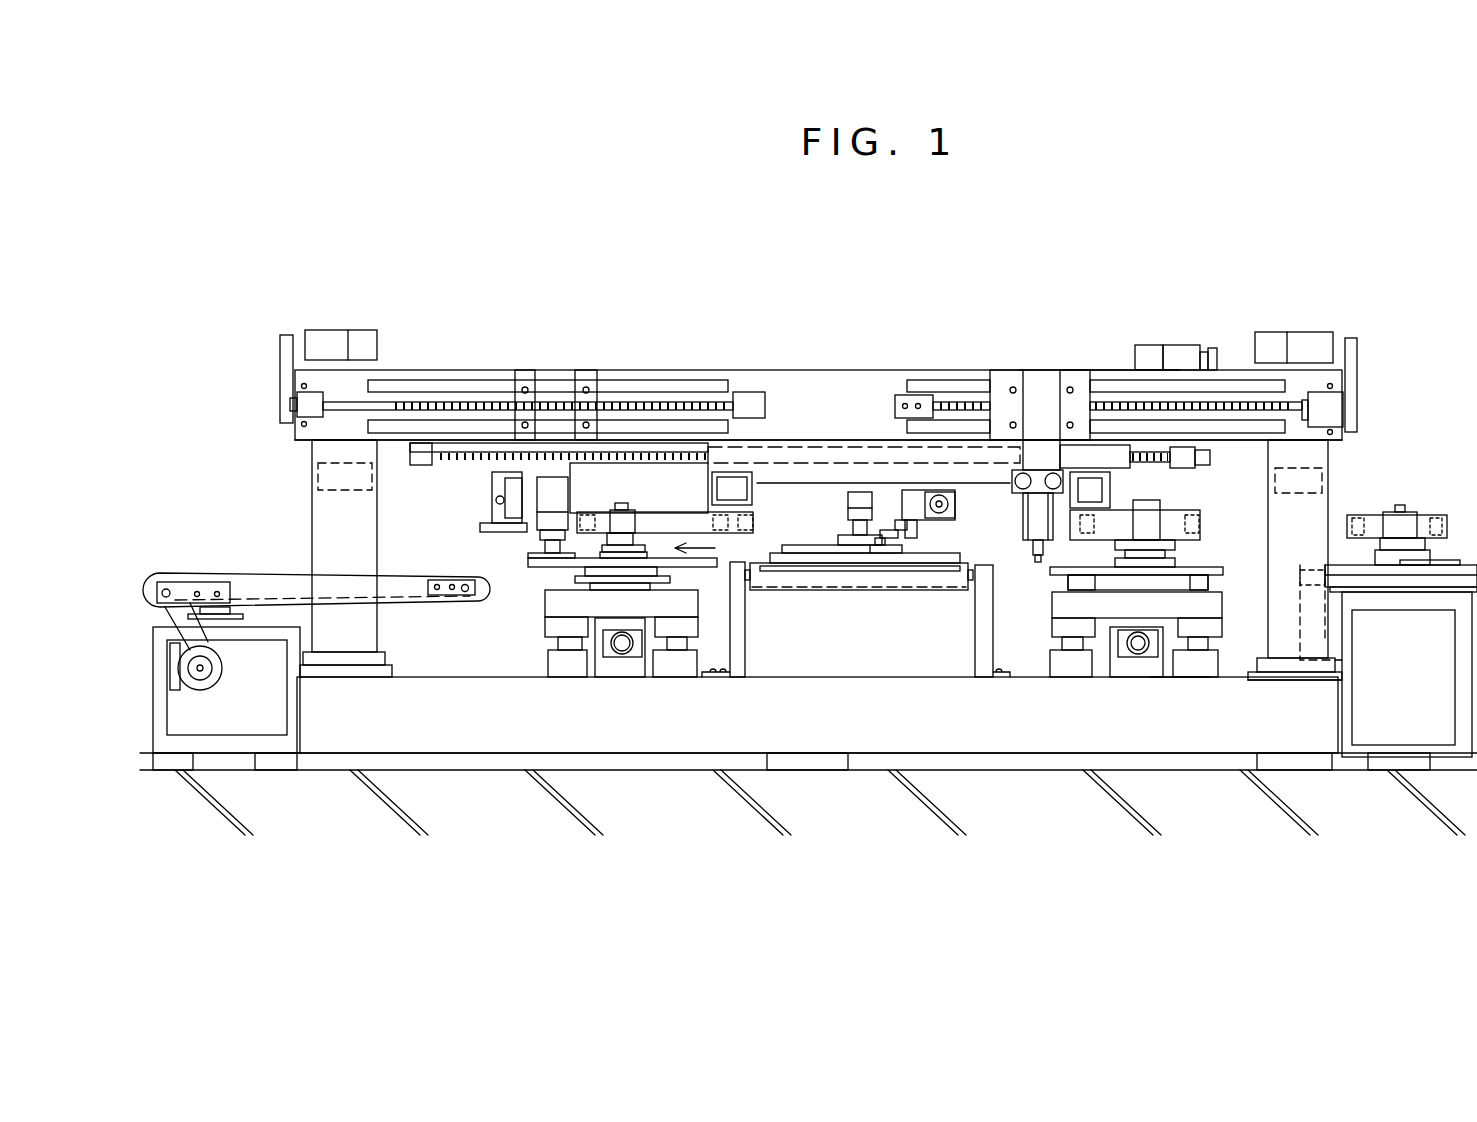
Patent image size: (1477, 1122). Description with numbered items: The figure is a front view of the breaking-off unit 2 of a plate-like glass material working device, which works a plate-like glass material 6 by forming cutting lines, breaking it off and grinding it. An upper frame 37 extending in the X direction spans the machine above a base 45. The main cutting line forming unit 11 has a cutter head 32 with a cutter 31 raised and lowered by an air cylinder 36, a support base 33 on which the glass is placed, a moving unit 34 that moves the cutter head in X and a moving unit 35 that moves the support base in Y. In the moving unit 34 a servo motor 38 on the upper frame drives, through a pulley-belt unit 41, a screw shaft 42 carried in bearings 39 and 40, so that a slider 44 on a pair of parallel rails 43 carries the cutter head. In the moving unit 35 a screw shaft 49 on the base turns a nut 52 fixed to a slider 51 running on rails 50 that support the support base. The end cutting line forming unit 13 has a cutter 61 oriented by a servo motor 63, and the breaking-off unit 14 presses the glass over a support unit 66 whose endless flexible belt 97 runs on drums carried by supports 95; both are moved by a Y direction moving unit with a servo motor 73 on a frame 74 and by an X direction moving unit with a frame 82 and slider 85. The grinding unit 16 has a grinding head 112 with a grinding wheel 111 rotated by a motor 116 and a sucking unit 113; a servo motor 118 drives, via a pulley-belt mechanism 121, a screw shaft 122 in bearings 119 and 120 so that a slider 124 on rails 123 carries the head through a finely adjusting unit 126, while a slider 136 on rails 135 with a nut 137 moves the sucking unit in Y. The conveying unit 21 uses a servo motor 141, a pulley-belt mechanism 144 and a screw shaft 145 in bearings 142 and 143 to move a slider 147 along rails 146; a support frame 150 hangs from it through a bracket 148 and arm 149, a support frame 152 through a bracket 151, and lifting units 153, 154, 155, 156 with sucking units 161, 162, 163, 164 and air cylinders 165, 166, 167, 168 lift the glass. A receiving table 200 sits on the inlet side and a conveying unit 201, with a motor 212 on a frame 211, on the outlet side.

The breaking-off unit 2 is at (697, 318).
The plate-like glass material 6 is at (805, 567).
The main cutting line forming unit 11 is at (1042, 630).
The end cutting line forming unit 13 is at (910, 548).
The breaking-off unit 14 is at (880, 560).
The grinding unit 16 is at (579, 632).
The conveying unit 21 is at (1378, 495).
The cutter 31 is at (1040, 580).
The cutter head 32 is at (1023, 530).
The support base 33 is at (1185, 567).
The moving unit 34 is at (1105, 349).
The moving unit 35 is at (1176, 712).
The air cylinder 36 is at (1036, 562).
The upper frame 37 is at (787, 370).
The servo motor 38 is at (1305, 332).
The bearing 39 is at (910, 395).
The bearing 40 is at (1330, 415).
The pulley-belt unit 41 is at (1357, 360).
The screw shaft 42 is at (1115, 398).
The rails 43 is at (950, 428).
The slider 44 is at (1040, 385).
The base 45 is at (648, 740).
The screw shaft 49 is at (1172, 698).
The rails 50 is at (1198, 660).
The slider 51 is at (1108, 640).
The nut 52 is at (1132, 650).
The end cutting line forming cutter 61 is at (895, 540).
The servo motor 63 is at (886, 522).
The support unit 66 is at (812, 610).
The servo motor 73 is at (925, 492).
The frame 74 is at (920, 530).
The frame 82 is at (777, 515).
The slider 85 is at (1015, 492).
The support 95 is at (975, 650).
The endless flexible belt 97 is at (856, 661).
The grinding wheel 111 is at (560, 567).
The grinding head 112 is at (480, 528).
The sucking unit 113 is at (670, 575).
The motor 116 is at (496, 501).
The servo motor 118 is at (335, 330).
The bearing 119 is at (750, 392).
The bearing 120 is at (297, 405).
The pulley-belt mechanism 121 is at (280, 387).
The screw shaft 122 is at (445, 402).
The rails 123 is at (395, 428).
The slider 124 is at (552, 385).
The X, Y and Z direction position finely adjusting unit 126 is at (492, 482).
The rails 135 is at (676, 660).
The slider 136 is at (555, 613).
The nut 137 is at (622, 660).
The servo motor 141 is at (1150, 345).
The bearing 142 is at (1195, 455).
The bearing 143 is at (418, 465).
The pulley-belt mechanism 144 is at (1210, 348).
The screw shaft 145 is at (660, 452).
The rails 146 is at (630, 455).
The slider 147 is at (803, 463).
The bracket 148 is at (1075, 450).
The arm 149 is at (1110, 490).
The support frame 150 is at (1415, 512).
The bracket 151 is at (712, 490).
The support frame 152 is at (650, 512).
The lifting unit 153 is at (1402, 505).
The lifting unit 154 is at (1200, 595).
The lifting unit 155 is at (858, 590).
The lifting unit 156 is at (715, 548).
The sucking unit 161 is at (1425, 565).
The sucking unit 162 is at (1150, 548).
The sucking unit 163 is at (875, 571).
The sucking unit 164 is at (552, 535).
The air cylinder 165 is at (1390, 587).
The air cylinder 166 is at (1200, 462).
The air cylinder 167 is at (855, 510).
The air cylinder 168 is at (610, 520).
The plate-like glass material receiving table 200 is at (1386, 661).
The plate-like glass material conveying unit 201 is at (204, 542).
The frame 211 is at (248, 745).
The motor 212 is at (222, 680).